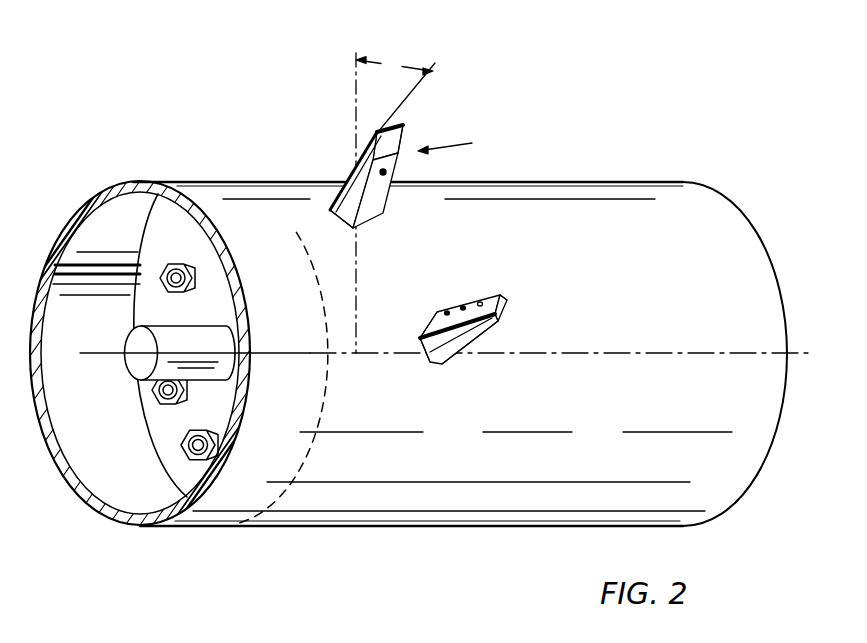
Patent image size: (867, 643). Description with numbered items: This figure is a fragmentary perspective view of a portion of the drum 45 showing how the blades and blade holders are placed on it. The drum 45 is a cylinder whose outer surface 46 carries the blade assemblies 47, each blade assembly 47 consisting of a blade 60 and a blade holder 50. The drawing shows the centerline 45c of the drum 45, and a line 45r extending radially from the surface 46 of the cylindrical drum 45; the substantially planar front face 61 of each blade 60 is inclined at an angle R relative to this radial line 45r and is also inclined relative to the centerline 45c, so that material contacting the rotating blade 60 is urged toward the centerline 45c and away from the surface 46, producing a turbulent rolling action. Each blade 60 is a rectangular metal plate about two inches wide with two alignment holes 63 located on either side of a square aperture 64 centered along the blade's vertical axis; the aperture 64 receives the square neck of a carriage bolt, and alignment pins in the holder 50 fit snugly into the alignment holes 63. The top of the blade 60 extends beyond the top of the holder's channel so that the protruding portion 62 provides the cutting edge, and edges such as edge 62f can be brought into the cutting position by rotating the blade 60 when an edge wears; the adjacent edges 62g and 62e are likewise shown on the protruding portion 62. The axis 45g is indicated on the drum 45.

The drum 45 is at (548, 183).
The centerline of the drum 45c is at (296, 232).
The drum axis 45g is at (111, 355).
The radial line 45r is at (354, 76).
The surface of the cylindrical drum 46 is at (628, 181).
The blade assembly 47 is at (463, 143).
The blade holder 50 is at (380, 195).
The blade 60 is at (346, 172).
The front face of the blade 61 is at (432, 318).
The protruding portion of the blade 62 is at (406, 132).
The cutting edge top face 62g is at (401, 126).
The edge 62f is at (564, 286).
The cutting edge lower face 62e is at (486, 325).
The alignment holes 63 is at (447, 311).
The blade aperture 64 is at (464, 306).